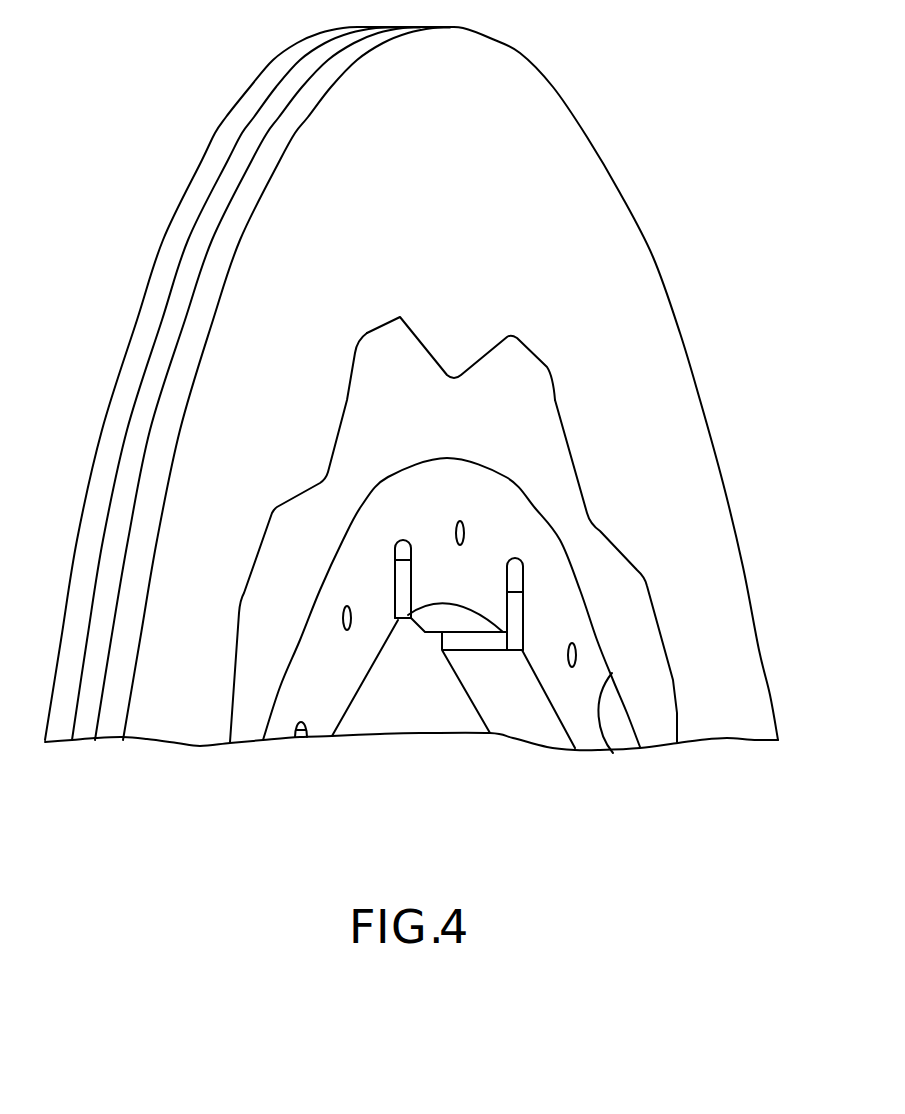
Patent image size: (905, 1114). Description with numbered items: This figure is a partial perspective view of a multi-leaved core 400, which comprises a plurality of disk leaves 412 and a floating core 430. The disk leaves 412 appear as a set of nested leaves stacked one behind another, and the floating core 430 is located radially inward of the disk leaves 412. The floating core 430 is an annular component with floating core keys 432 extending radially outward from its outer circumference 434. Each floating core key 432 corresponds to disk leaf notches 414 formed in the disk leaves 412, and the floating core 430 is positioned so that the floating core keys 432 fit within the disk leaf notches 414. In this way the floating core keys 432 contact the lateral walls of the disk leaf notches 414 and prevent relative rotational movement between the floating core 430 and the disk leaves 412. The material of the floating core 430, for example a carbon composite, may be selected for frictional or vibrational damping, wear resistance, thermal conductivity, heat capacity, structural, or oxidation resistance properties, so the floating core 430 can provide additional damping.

The multi-leaved core 400 is at (127, 88).
The disk leaves 412 is at (57, 722).
The disk leaf notches 414 is at (453, 521).
The floating core 430 is at (333, 689).
The floating core keys 432 is at (420, 367).
The outer circumference 434 is at (613, 753).